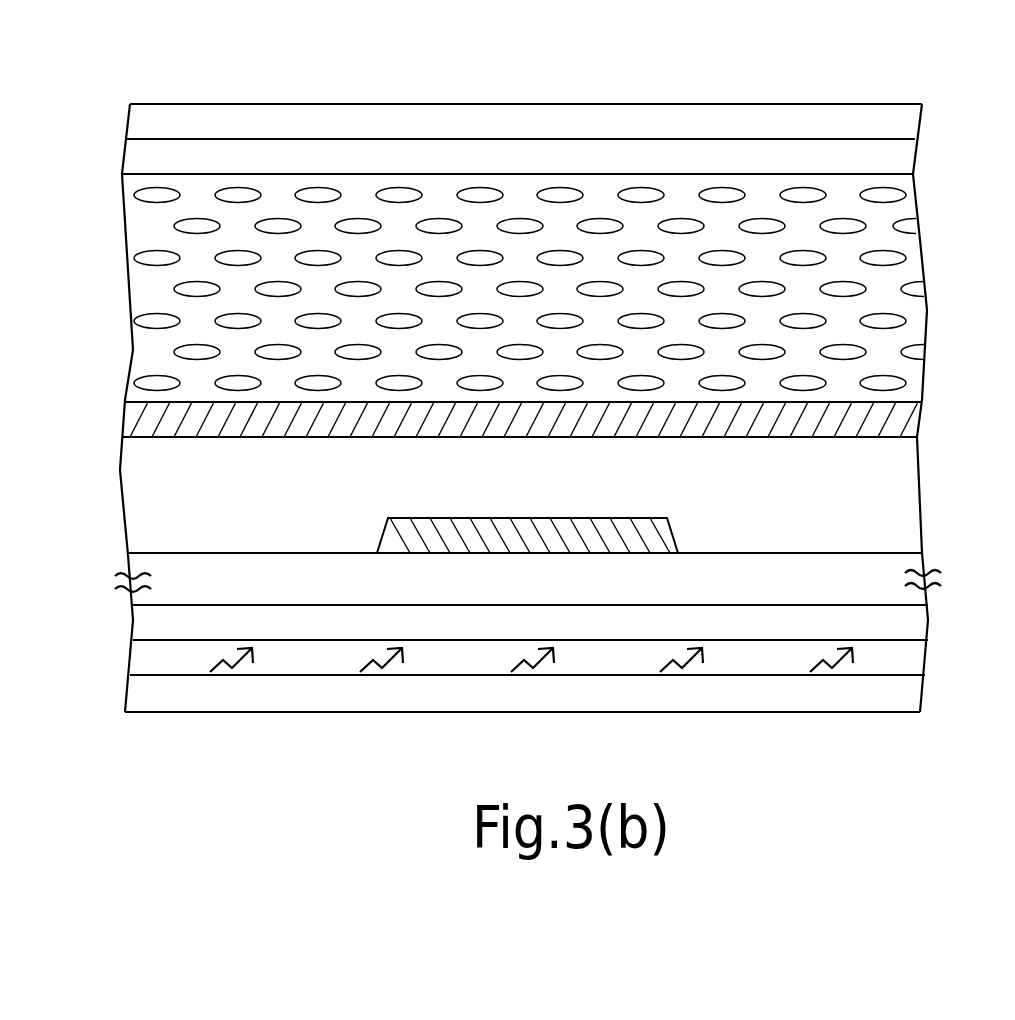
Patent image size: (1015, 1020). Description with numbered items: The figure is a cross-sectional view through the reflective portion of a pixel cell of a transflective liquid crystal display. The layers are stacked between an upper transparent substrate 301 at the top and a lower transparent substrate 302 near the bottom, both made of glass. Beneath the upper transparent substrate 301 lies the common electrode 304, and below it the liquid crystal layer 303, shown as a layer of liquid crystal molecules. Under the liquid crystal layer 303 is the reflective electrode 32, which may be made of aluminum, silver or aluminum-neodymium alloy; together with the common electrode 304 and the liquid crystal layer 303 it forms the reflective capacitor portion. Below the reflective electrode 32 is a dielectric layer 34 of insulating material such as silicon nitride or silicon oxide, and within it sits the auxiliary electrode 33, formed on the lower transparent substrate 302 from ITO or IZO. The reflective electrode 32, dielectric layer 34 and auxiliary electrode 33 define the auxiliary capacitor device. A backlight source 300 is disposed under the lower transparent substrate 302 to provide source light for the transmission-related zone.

The upper transparent substrate 301 is at (722, 115).
The common electrode 304 is at (830, 162).
The liquid crystal layer 303 is at (907, 273).
The reflective electrode 32 is at (900, 403).
The dielectric layer 34 is at (902, 492).
The auxiliary electrode 33 is at (628, 532).
The lower transparent substrate 302 is at (917, 630).
The backlight source 300 is at (902, 693).